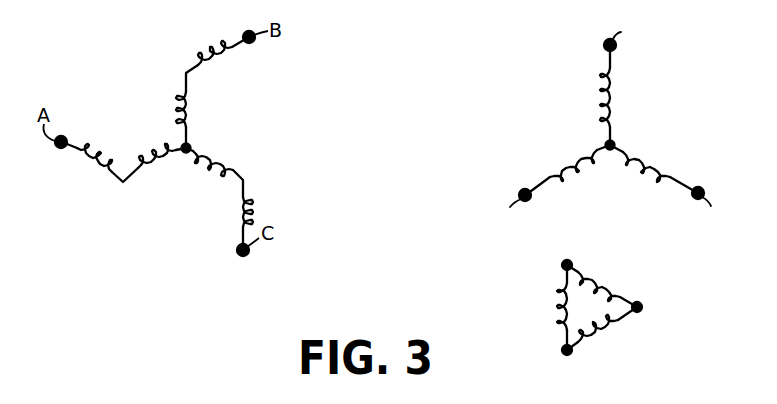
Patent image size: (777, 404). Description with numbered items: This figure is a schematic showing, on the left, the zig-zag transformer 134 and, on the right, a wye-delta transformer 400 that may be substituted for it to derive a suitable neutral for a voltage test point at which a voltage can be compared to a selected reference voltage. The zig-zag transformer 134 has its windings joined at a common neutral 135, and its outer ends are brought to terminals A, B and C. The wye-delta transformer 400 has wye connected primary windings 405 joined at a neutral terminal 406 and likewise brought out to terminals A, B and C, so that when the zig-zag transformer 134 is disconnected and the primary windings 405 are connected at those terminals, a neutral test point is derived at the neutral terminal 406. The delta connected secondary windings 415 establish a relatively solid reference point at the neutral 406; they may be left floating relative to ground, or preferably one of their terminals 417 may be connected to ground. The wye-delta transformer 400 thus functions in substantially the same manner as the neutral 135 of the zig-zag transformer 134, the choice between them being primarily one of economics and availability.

The zig-zag transformer 134 is at (178, 141).
The neutral of the zig-zag transformer 135 is at (191, 146).
The wye-delta transformer 400 is at (621, 88).
The wye connected primary windings 405 is at (611, 97).
The neutral terminal of the wye connected primary windings 406 is at (608, 143).
The delta connected secondary windings 415 is at (603, 272).
The terminals of the delta connected windings 417 is at (565, 260).